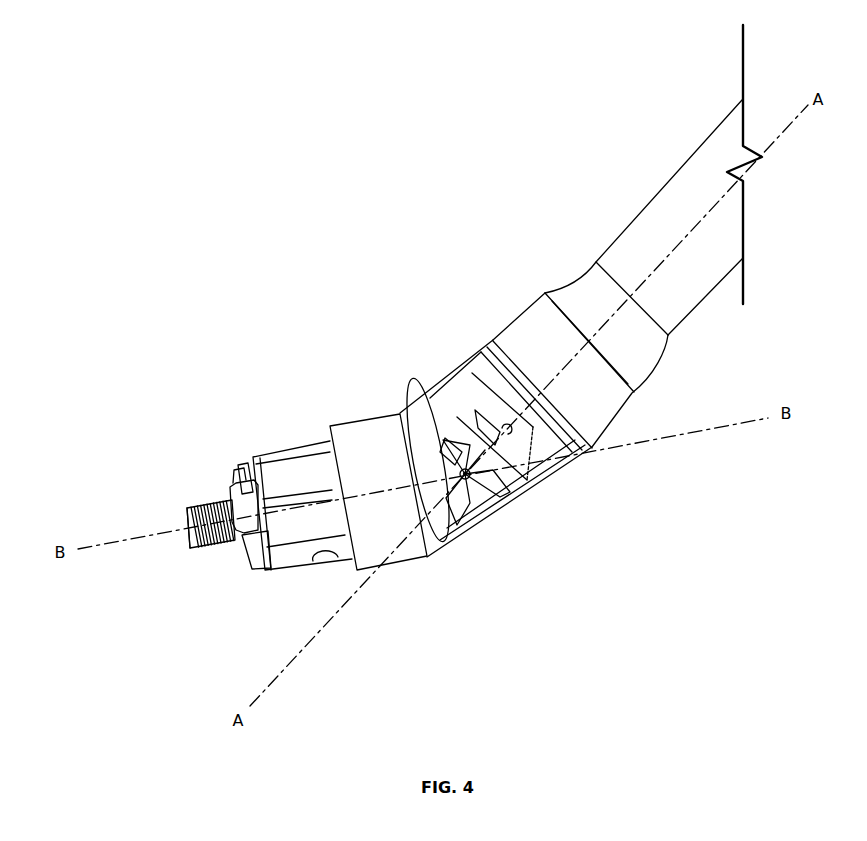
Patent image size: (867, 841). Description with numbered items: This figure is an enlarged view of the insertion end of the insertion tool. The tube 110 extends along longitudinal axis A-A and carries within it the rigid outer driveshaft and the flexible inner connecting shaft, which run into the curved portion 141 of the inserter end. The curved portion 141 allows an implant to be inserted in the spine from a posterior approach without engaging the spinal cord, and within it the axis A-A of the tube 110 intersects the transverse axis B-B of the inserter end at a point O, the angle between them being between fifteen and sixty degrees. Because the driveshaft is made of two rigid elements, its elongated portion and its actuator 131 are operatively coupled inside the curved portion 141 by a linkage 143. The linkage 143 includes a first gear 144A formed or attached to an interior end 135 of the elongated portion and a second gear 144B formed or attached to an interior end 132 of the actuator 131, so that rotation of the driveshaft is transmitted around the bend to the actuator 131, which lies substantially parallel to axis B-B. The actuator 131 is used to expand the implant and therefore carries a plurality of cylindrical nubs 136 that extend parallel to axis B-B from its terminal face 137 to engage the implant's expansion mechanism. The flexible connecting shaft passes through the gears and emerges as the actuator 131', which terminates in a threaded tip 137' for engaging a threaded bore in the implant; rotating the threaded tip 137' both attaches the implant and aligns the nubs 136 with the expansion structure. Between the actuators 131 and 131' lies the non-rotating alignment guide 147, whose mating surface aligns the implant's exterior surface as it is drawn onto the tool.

The tube 110 is at (702, 147).
The interior end 135 is at (537, 430).
The curved portion 141 is at (432, 396).
The linkage 143 is at (443, 435).
The first gear 144A is at (475, 410).
The second gear 144B is at (445, 438).
The interior end 132 is at (435, 510).
The point O is at (466, 476).
The actuator 131 is at (337, 527).
The actuator 131' is at (177, 553).
The threaded tip 137' is at (140, 499).
The alignment guide 147 is at (246, 550).
The nubs 136 is at (240, 473).
The terminal face 137 is at (226, 432).